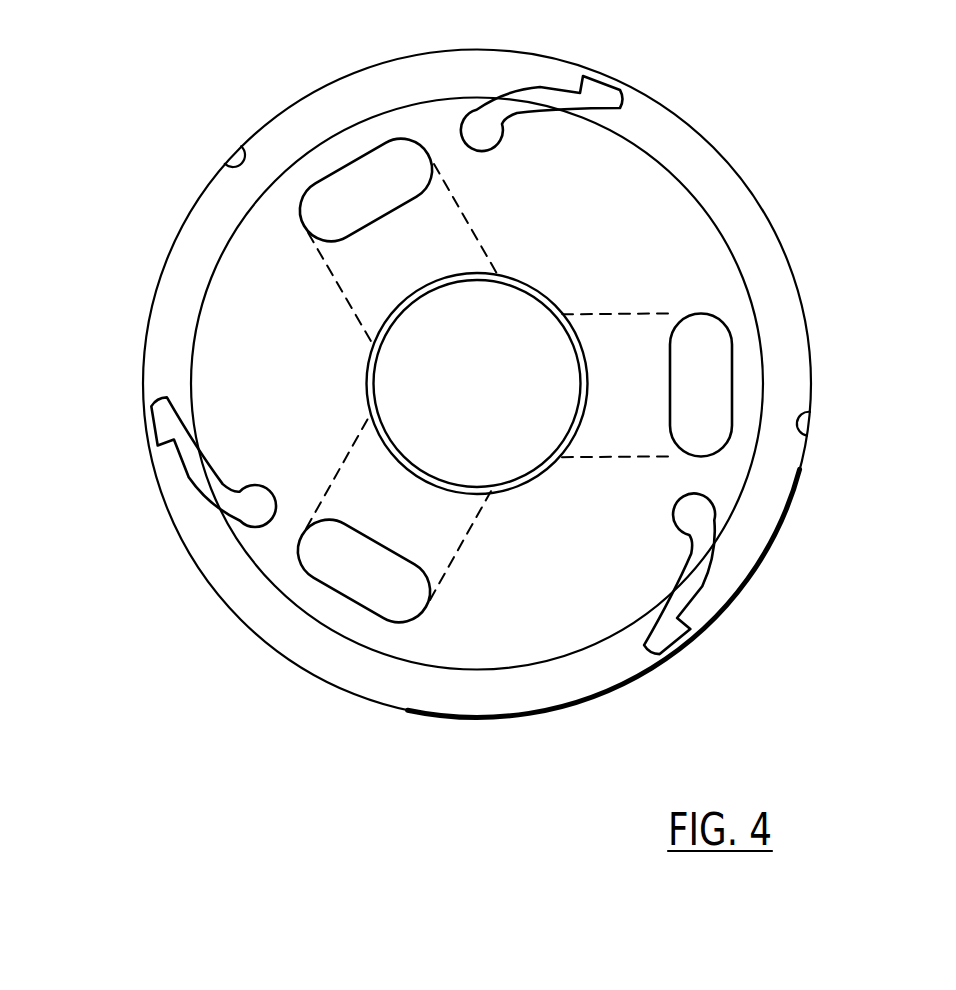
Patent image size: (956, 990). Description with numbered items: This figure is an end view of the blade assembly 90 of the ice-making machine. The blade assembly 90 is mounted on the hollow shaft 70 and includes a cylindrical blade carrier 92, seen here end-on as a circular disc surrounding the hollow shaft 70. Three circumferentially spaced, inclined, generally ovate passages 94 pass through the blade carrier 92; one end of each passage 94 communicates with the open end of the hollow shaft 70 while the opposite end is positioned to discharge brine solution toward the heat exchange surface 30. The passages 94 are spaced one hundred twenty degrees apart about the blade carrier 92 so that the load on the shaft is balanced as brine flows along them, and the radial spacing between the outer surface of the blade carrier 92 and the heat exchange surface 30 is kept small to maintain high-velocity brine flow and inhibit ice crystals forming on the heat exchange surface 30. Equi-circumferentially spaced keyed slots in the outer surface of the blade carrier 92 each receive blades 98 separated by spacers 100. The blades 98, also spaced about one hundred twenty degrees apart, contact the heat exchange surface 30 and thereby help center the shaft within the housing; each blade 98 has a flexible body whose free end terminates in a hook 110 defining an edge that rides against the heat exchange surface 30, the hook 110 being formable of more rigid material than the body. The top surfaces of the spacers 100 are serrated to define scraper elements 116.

The heat exchange surface 30 is at (237, 148).
The hollow shaft 70 is at (558, 315).
The blade assembly 90 is at (247, 746).
The blade carrier 92 is at (503, 653).
The passage 94 is at (315, 215).
The blade 98 is at (711, 557).
The spacer 100 is at (449, 365).
The hook 110 is at (401, 365).
The scraper element 116 is at (480, 110).